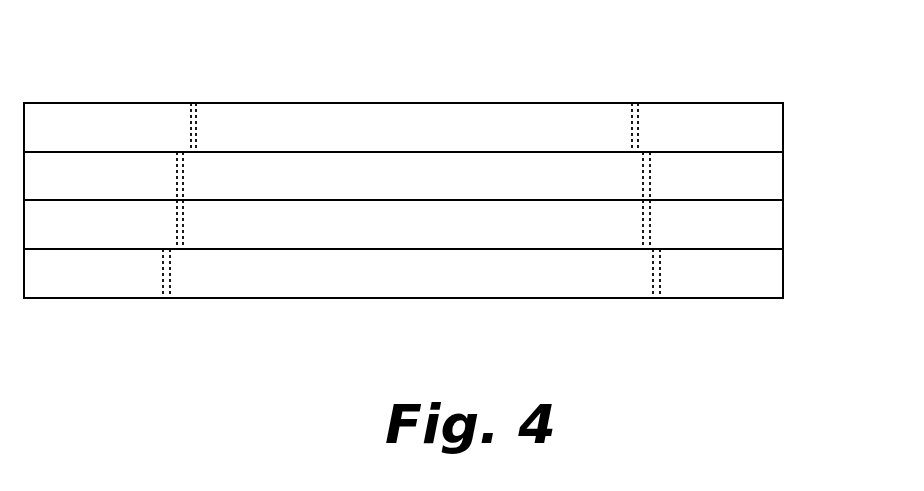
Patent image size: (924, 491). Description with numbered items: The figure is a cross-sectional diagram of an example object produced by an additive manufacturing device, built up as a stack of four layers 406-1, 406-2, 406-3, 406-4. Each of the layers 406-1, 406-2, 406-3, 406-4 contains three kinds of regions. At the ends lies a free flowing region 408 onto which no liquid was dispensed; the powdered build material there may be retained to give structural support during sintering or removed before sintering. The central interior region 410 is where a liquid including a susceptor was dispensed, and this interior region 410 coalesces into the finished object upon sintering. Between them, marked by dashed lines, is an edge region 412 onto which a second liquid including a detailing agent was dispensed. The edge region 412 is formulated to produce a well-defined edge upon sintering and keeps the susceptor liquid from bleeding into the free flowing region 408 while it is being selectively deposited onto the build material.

The interior region 410 is at (315, 120).
The edge region 412 is at (192, 120).
The free flowing region 408 is at (707, 120).
The layer 406-1 is at (785, 249).
The layer 406-2 is at (785, 200).
The layer 406-3 is at (785, 152).
The layer 406-4 is at (785, 103).